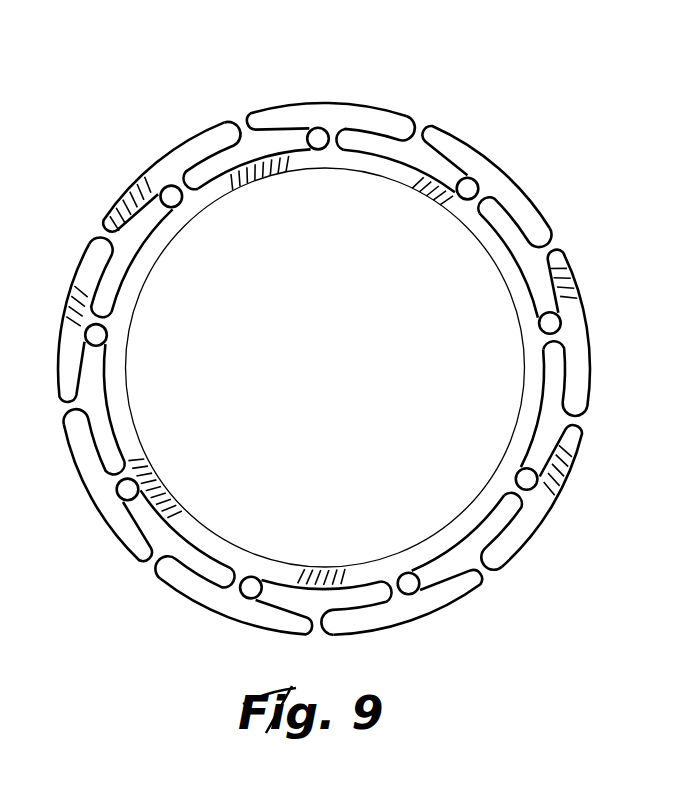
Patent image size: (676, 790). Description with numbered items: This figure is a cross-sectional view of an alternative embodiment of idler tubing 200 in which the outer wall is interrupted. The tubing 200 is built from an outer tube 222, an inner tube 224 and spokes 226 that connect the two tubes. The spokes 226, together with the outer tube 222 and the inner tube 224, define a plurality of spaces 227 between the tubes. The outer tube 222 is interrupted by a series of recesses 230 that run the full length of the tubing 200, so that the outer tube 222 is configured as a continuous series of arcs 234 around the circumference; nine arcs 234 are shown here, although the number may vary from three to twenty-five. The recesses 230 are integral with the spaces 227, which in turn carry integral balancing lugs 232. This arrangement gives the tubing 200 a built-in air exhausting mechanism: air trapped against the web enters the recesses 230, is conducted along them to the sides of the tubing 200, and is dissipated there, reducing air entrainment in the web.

The tubing 200 is at (365, 344).
The outer tube 222 is at (472, 146).
The inner tube 224 is at (455, 222).
The spokes 226 is at (568, 337).
The spaces 227 is at (532, 254).
The recesses 230 is at (412, 128).
The lugs 232 is at (406, 583).
The arcs 234 is at (576, 480).